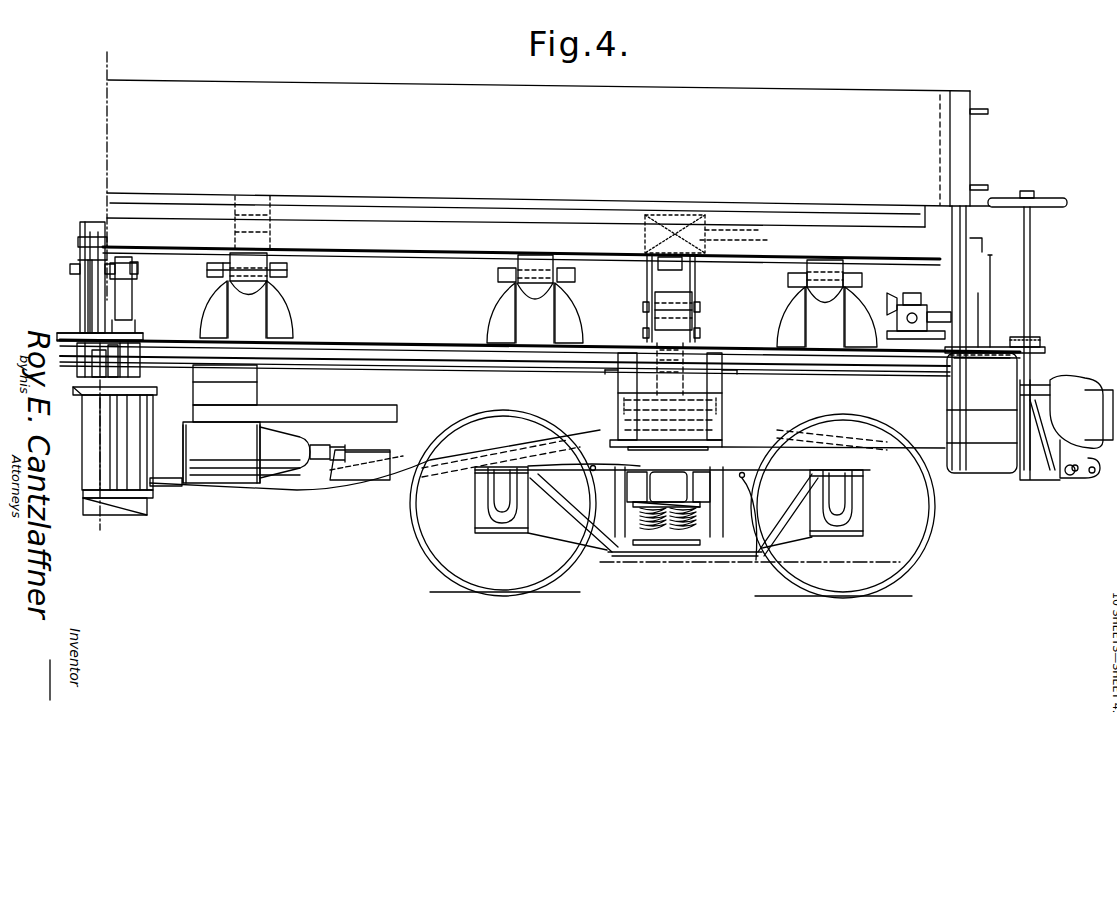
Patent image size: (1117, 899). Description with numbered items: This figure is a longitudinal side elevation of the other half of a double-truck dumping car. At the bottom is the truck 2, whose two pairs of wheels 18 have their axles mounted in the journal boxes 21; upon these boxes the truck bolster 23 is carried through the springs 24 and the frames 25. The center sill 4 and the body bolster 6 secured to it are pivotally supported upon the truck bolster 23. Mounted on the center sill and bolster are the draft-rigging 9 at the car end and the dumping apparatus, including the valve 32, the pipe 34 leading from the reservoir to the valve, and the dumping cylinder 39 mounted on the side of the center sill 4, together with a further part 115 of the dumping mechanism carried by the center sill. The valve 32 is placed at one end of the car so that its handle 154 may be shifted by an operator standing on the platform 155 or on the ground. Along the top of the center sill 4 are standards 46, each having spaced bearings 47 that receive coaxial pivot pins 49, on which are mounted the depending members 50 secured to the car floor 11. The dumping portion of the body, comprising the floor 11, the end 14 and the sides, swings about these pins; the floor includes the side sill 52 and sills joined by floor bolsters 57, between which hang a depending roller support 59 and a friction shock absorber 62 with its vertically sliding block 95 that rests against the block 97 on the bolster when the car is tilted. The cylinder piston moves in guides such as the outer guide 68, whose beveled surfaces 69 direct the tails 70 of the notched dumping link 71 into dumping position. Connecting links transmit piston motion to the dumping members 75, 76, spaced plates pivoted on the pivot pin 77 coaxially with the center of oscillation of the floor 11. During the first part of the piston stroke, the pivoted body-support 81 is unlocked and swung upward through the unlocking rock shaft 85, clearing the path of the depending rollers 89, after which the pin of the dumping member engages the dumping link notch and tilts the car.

The truck 2 is at (638, 535).
The center sill 4 is at (540, 415).
The bolster 6 is at (718, 410).
The draft-rigging 9 is at (1083, 400).
The floor 11 is at (538, 222).
The end 14 is at (968, 145).
The wheels 18 is at (672, 504).
The journal boxes 21 is at (498, 493).
The truck bolster 23 is at (668, 489).
The springs 24 is at (657, 533).
The frames 25 is at (753, 477).
The valve 32 is at (900, 307).
The pipe 34 is at (883, 303).
The dumping cylinder 39 is at (107, 477).
The standards 46 is at (283, 308).
The bearings 47 is at (277, 263).
The pivot pins 49 is at (213, 272).
The depending members 50 is at (258, 256).
The side sill 52 is at (371, 249).
The floor bolsters 57 is at (700, 234).
The depending roller support 59 is at (653, 320).
The shock absorber 62 is at (683, 220).
The outer guide 68 is at (72, 377).
The beveled surfaces 69 is at (84, 400).
The tails 70 is at (78, 372).
The dumping link 71 is at (77, 297).
The dumping member 75 is at (78, 293).
The dumping member 76 is at (130, 292).
The pivot pin 77 is at (137, 267).
The pivoted body-support 81 is at (697, 362).
The unlocking rock shaft 85 is at (560, 360).
The depending rollers 89 is at (690, 327).
The vertically sliding block 95 is at (690, 267).
The block 97 is at (667, 220).
The winch shaft bearing 115 is at (100, 373).
The handle 154 is at (977, 302).
The platform 155 is at (973, 347).